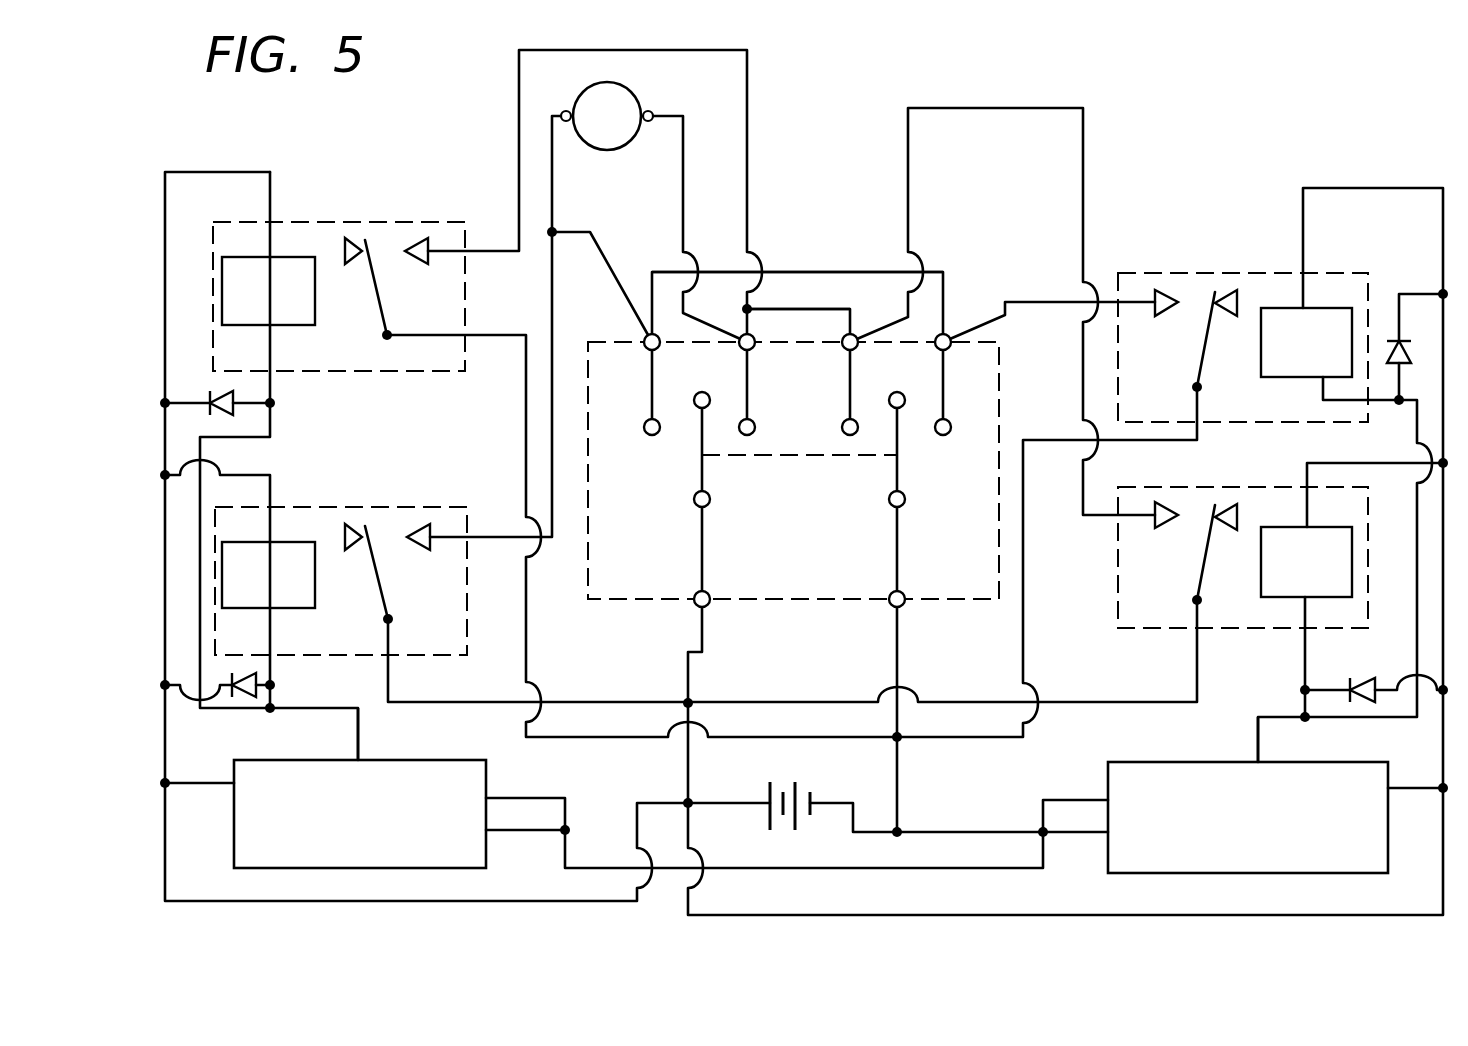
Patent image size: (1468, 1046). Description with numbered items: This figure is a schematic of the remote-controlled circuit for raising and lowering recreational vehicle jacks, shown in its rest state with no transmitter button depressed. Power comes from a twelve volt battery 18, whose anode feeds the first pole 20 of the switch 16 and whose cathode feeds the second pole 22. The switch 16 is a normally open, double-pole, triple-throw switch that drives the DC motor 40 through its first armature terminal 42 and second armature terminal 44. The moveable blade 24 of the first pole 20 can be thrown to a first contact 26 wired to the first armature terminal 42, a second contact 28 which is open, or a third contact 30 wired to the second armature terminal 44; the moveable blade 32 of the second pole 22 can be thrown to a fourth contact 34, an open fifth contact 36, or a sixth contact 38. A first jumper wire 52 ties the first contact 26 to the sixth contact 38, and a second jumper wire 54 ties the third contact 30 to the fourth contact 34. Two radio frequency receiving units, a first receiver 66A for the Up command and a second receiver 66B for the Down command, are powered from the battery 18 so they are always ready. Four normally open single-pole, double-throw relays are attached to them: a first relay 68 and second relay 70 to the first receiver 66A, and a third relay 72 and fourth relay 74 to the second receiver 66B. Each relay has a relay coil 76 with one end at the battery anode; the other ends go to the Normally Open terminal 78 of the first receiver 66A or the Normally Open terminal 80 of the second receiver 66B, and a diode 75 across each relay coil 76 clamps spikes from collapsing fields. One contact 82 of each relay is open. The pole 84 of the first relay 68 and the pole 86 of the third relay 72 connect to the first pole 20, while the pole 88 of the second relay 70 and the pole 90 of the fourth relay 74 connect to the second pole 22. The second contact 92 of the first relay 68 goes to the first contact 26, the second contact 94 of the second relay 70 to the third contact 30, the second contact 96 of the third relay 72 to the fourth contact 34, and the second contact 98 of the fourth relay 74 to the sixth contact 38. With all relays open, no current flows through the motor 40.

The switch 16 is at (845, 601).
The battery 18 is at (770, 792).
The first pole 20 is at (706, 595).
The second pole 22 is at (903, 597).
The moveable blade 24 is at (702, 465).
The first contact 26 is at (650, 436).
The second contact 28 is at (694, 400).
The third contact 30 is at (756, 430).
The moveable blade 32 is at (897, 463).
The fourth contact 34 is at (847, 421).
The fifth contact 36 is at (905, 399).
The sixth contact 38 is at (951, 427).
The DC motor 40 is at (640, 93).
The first armature terminal 42 is at (562, 113).
The second armature terminal 44 is at (655, 114).
The first jumper wire 52 is at (785, 270).
The second jumper wire 54 is at (797, 309).
The first receiver 66A is at (440, 869).
The second receiver 66B is at (1348, 875).
The first relay 68 is at (378, 507).
The second relay 70 is at (395, 373).
The third relay 72 is at (1335, 630).
The fourth relay 74 is at (1338, 273).
The diode 75 is at (220, 415).
The relay coil 76 is at (262, 257).
The Normally Open terminal 78 is at (360, 753).
The Normally Open terminal 80 is at (1256, 752).
The contact 82 is at (355, 238).
The pole 84 is at (392, 617).
The pole 86 is at (1200, 600).
The pole 88 is at (385, 336).
The pole 90 is at (1195, 388).
The second contact 92 is at (420, 528).
The second contact 94 is at (410, 248).
The second contact 96 is at (1163, 503).
The second contact 98 is at (1163, 290).